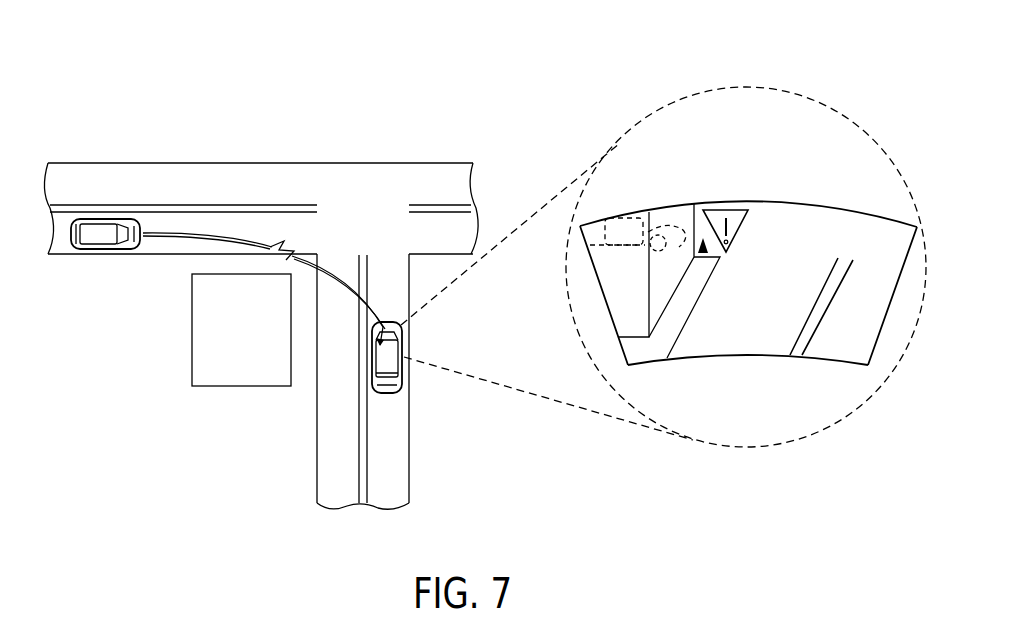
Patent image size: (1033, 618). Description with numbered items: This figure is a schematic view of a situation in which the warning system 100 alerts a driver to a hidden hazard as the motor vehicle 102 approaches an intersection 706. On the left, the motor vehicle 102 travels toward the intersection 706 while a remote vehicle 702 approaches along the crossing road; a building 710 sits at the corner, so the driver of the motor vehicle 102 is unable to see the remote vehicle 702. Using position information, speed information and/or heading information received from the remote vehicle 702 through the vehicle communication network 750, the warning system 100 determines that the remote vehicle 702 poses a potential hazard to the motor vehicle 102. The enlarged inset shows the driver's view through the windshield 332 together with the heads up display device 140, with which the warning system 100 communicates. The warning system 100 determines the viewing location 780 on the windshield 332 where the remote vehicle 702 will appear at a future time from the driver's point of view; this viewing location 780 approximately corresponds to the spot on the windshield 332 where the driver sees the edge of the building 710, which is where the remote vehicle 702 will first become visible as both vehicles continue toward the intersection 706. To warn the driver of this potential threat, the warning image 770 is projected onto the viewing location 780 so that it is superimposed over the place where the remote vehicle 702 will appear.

The warning system 100 is at (766, 114).
The motor vehicle 102 is at (403, 381).
The heads up display device 140 is at (727, 360).
The windshield 332 is at (818, 214).
The remote vehicle 702 is at (95, 236).
The intersection 706 is at (376, 203).
The building 710 is at (246, 372).
The vehicle communication network 750 is at (269, 238).
The warning image 770 is at (721, 213).
The viewing location 780 is at (704, 252).